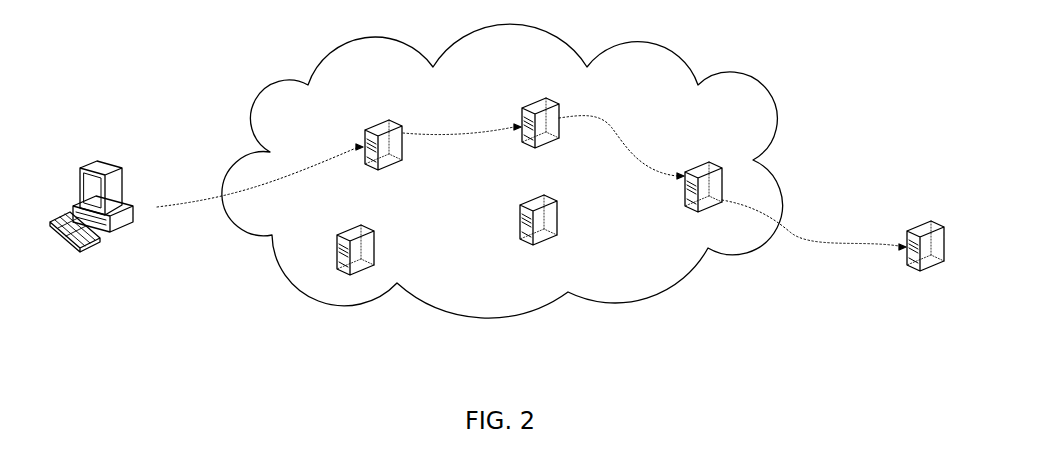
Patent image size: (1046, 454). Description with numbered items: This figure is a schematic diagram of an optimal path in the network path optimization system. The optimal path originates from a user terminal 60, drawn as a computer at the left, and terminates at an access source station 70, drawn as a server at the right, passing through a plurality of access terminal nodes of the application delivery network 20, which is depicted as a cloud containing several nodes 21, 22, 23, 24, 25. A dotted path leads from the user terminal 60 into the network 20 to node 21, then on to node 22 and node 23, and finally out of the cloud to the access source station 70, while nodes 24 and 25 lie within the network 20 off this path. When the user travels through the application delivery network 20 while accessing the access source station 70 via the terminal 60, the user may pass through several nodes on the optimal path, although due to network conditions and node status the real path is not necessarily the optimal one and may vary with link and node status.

The application delivery network 20 is at (617, 308).
The server 21 is at (383, 160).
The server 22 is at (540, 134).
The server 23 is at (703, 199).
The server 24 is at (355, 259).
The server 25 is at (538, 231).
The user terminal 60 is at (130, 222).
The access source station 70 is at (922, 272).